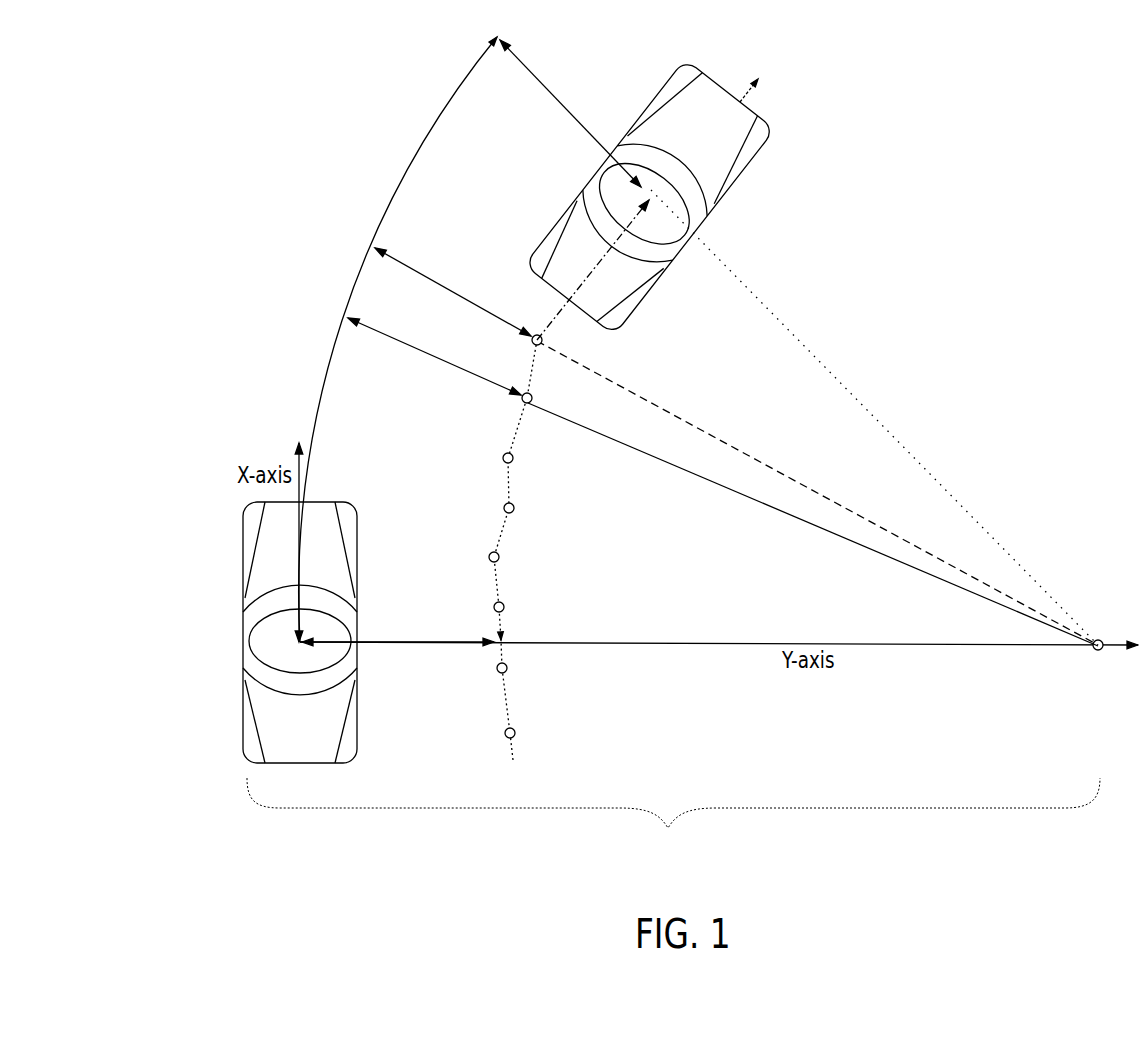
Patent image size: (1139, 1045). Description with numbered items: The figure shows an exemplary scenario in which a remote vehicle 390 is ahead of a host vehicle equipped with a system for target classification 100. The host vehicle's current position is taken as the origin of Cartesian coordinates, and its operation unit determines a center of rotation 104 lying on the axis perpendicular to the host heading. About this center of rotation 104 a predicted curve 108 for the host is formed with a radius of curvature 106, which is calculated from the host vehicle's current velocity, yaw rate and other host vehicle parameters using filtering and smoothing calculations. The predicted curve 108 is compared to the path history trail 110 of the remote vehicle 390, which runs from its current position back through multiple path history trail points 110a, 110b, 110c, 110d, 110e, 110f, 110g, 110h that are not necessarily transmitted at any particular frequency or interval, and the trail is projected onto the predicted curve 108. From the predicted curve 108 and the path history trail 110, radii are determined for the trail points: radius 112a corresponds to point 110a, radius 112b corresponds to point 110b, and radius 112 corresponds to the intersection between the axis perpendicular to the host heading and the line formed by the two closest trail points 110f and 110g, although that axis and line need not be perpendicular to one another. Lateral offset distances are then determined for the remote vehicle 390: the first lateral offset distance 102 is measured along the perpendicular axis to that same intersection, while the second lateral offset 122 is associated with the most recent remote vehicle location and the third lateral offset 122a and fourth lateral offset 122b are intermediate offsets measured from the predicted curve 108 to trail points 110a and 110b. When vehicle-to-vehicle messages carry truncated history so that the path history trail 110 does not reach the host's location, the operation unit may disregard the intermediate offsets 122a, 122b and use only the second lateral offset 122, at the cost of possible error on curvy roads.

The system for target classification 100 is at (240, 548).
The Lateral Offset1 distance 102 is at (377, 647).
The center of rotation 104 is at (1098, 652).
The radius of curvature 106 is at (673, 823).
The predicted curve 108 is at (398, 180).
The path history trail 110 is at (426, 452).
The path history trail point 110a is at (537, 335).
The path history trail point 110b is at (522, 403).
The path history trail point 110c is at (503, 460).
The path history trail point 110d is at (513, 508).
The path history trail point 110e is at (490, 557).
The path history trail point 110f is at (504, 607).
The path history trail point 110g is at (507, 667).
The path history trail point 110h is at (505, 735).
The radius 112 is at (730, 630).
The radius 112a is at (763, 463).
The radius 112b is at (808, 528).
The lateral offset 2 122 is at (560, 110).
The lateral offset 3 122a is at (455, 295).
The lateral offset 4 122b is at (437, 362).
The remote vehicle 390 is at (718, 80).